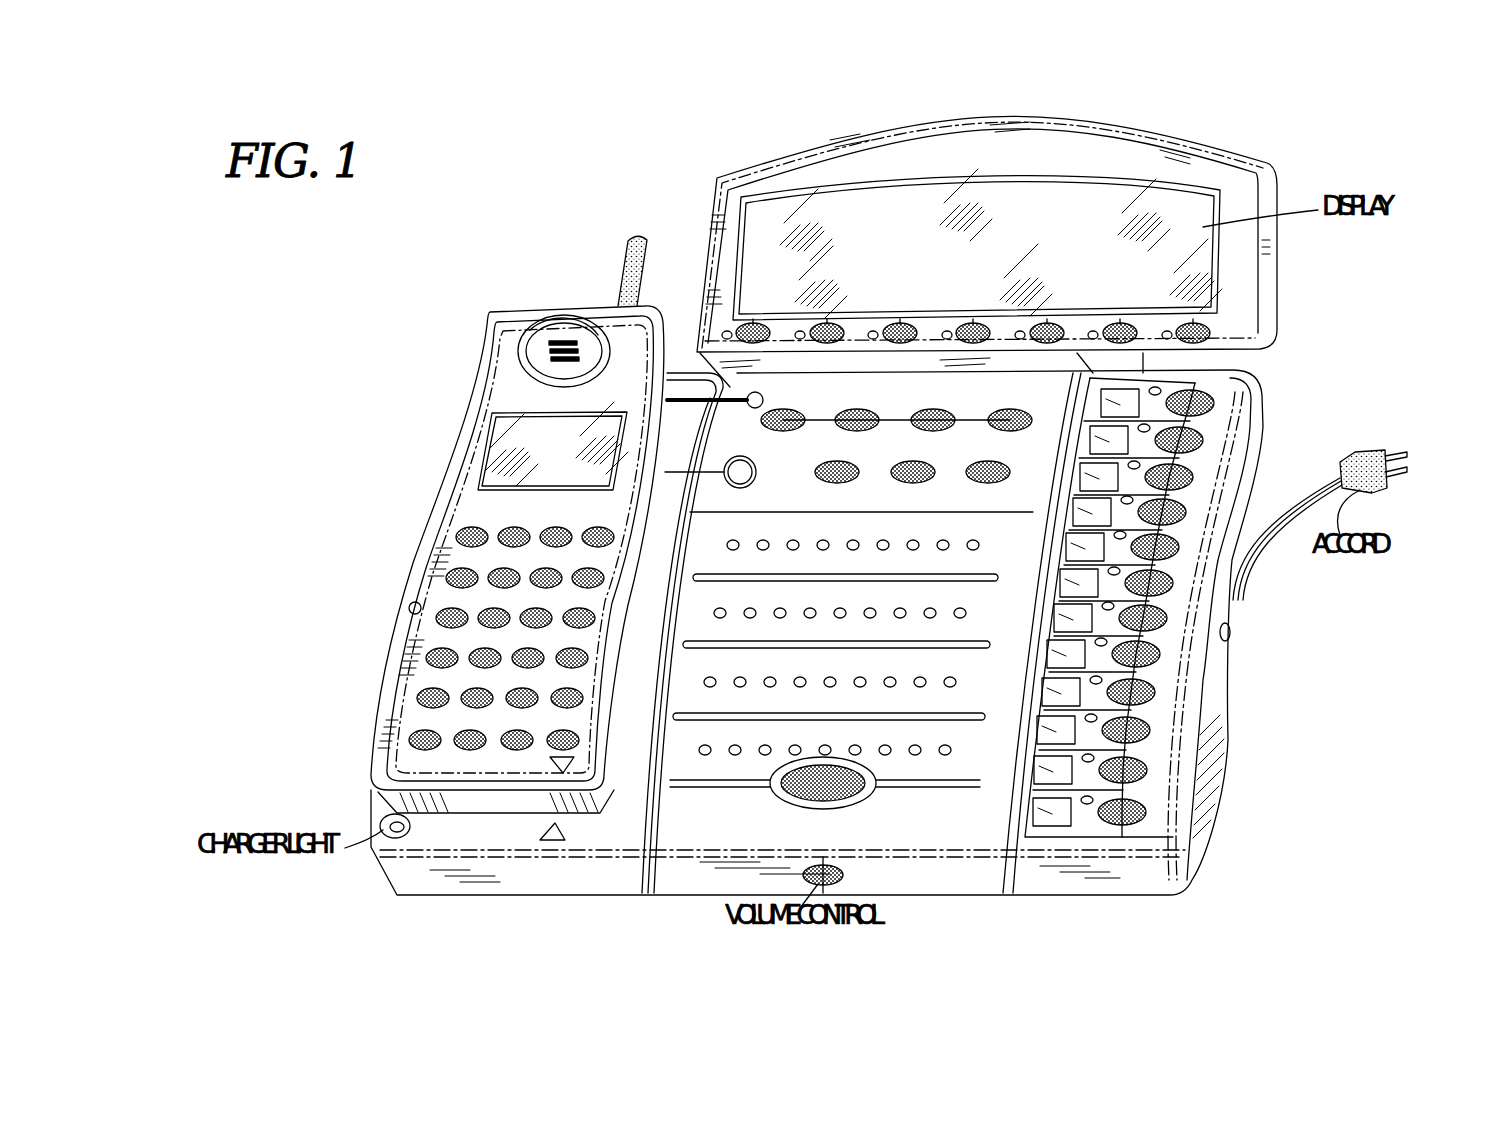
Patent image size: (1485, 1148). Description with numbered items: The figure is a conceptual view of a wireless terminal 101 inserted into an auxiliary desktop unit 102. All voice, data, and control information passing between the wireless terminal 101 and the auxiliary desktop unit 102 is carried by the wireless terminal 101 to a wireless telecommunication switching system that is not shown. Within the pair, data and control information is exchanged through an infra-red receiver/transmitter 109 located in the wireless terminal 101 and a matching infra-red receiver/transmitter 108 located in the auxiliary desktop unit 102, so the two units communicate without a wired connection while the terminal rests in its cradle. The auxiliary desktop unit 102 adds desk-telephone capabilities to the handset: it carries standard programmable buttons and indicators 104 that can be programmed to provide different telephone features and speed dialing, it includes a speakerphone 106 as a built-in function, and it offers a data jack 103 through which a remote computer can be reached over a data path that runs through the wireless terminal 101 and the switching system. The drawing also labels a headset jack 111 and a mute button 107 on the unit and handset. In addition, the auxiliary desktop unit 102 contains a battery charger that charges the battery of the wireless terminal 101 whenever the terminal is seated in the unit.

The wireless terminal 101 is at (492, 375).
The auxiliary desktop unit 102 is at (1203, 467).
The data jack 103 is at (1231, 633).
The programmable buttons and indicators 104 is at (1150, 712).
The speakerphone 106 is at (745, 752).
The mute button 107 is at (832, 800).
The infra-red receiver/transmitter 108 is at (540, 835).
The infra-red receiver/transmitter 109 is at (550, 766).
The headset jack 111 is at (410, 605).